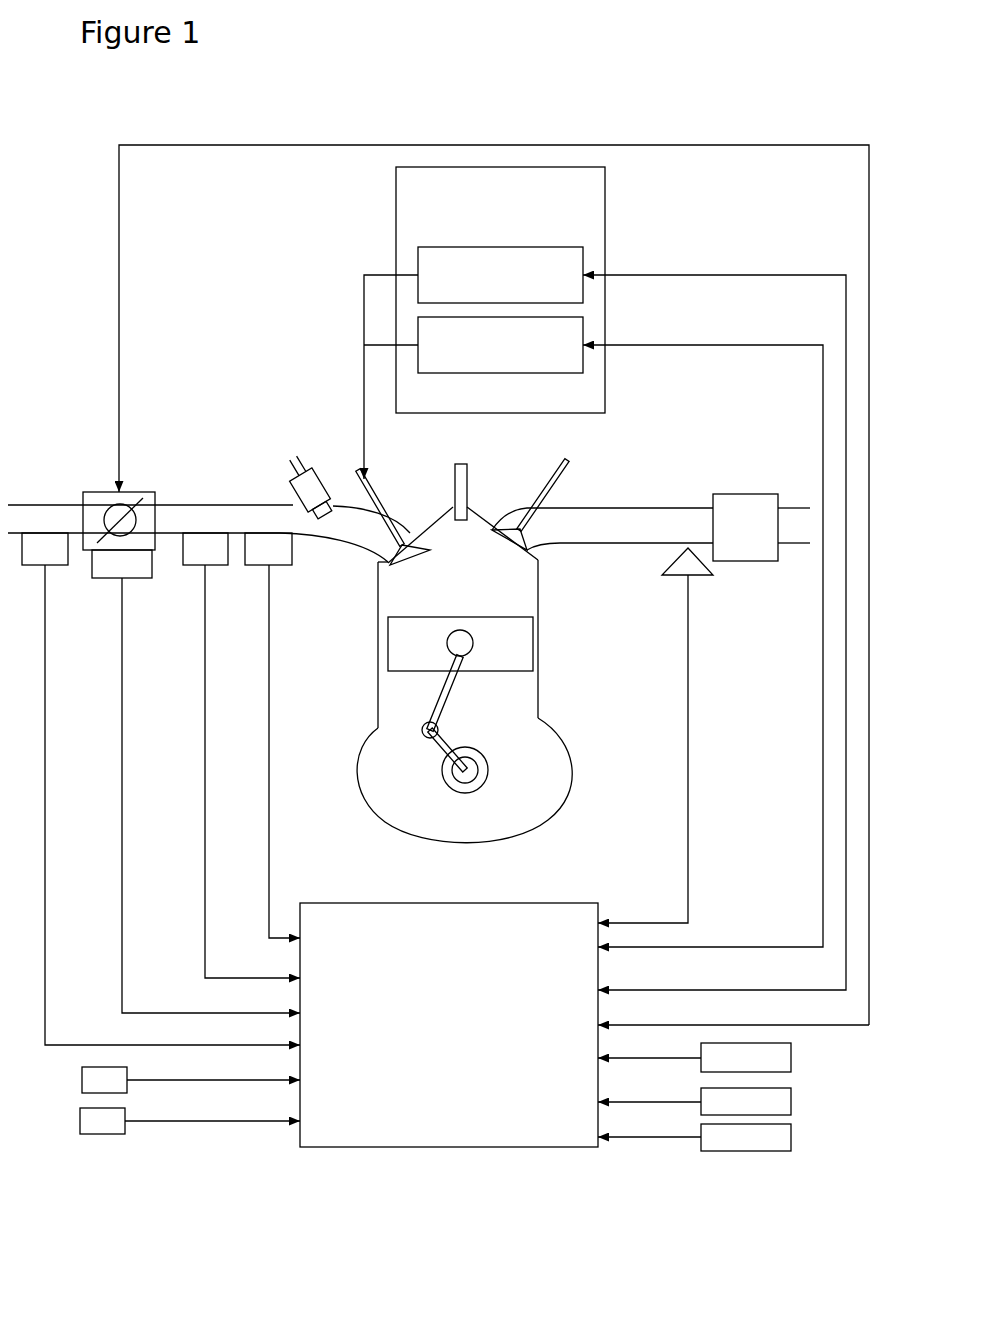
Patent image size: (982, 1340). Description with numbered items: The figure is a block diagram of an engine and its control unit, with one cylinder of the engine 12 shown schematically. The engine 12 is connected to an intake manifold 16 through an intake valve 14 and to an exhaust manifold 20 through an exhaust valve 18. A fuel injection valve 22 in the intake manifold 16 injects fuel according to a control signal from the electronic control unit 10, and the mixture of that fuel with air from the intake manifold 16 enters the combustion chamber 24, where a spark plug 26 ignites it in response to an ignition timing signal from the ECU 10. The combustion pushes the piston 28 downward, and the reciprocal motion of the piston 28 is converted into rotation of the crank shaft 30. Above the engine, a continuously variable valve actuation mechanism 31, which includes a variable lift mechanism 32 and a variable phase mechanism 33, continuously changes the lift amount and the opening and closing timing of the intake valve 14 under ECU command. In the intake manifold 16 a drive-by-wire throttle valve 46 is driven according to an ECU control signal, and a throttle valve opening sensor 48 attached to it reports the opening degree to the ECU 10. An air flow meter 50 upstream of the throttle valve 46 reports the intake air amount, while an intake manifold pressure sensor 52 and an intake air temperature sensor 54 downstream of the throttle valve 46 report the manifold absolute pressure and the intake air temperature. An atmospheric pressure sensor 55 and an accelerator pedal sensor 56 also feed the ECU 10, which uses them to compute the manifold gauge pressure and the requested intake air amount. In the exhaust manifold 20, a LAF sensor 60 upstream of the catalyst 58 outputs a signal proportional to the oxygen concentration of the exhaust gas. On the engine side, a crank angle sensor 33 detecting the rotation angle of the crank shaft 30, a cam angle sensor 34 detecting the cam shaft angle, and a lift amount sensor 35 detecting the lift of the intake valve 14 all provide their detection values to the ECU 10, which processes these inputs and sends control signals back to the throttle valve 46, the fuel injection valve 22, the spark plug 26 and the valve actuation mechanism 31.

The electronic control unit (ECU) 10 is at (575, 903).
The engine 12 is at (582, 682).
The intake valve 14 is at (385, 505).
The intake manifold 16 is at (353, 543).
The exhaust valve 18 is at (558, 482).
The exhaust manifold 20 is at (607, 507).
The fuel injection valve 22 is at (318, 472).
The combustion chamber 24 is at (469, 603).
The spark plug 26 is at (467, 477).
The piston 28 is at (533, 633).
The crank shaft 30 is at (488, 767).
The continuously variable valve actuation mechanism 31 is at (605, 205).
The variable lift mechanism 32 is at (552, 247).
The variable phase mechanism / crank angle sensor 33 is at (530, 373).
The cam angle sensor 34 is at (793, 1100).
The lift amount sensor 35 is at (793, 1135).
The throttle valve 46 is at (147, 492).
The throttle valve opening sensor 48 is at (138, 578).
The air flow meter 50 is at (60, 565).
The intake manifold pressure sensor 52 is at (218, 565).
The intake air temperature sensor 54 is at (282, 565).
The atmospheric pressure sensor 55 is at (82, 1078).
The accelerator pedal sensor 56 is at (80, 1118).
The catalyst 58 is at (752, 493).
The LAF sensor 60 is at (705, 578).